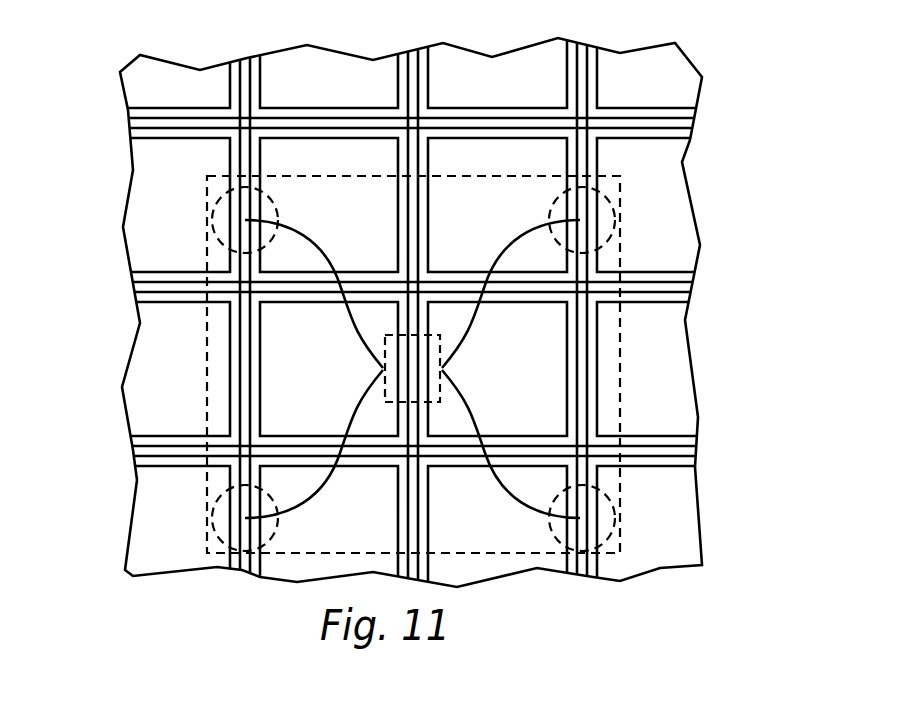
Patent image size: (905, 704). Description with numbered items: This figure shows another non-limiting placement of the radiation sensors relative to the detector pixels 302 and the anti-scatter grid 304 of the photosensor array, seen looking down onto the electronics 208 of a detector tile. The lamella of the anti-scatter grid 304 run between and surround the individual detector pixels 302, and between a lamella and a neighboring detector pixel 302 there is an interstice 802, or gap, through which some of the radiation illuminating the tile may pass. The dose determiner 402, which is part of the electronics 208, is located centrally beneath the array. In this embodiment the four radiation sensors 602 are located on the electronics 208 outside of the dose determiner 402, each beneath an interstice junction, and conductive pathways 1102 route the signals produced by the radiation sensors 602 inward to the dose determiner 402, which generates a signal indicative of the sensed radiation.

The electronics 208 is at (323, 175).
The detector pixels 302 is at (662, 379).
The anti-scatter grid 304 is at (678, 285).
The dose determiner 402 is at (439, 334).
The radiation sensor 602 is at (213, 223).
The interstice 802 is at (657, 275).
The conductive pathways 1102 is at (352, 318).